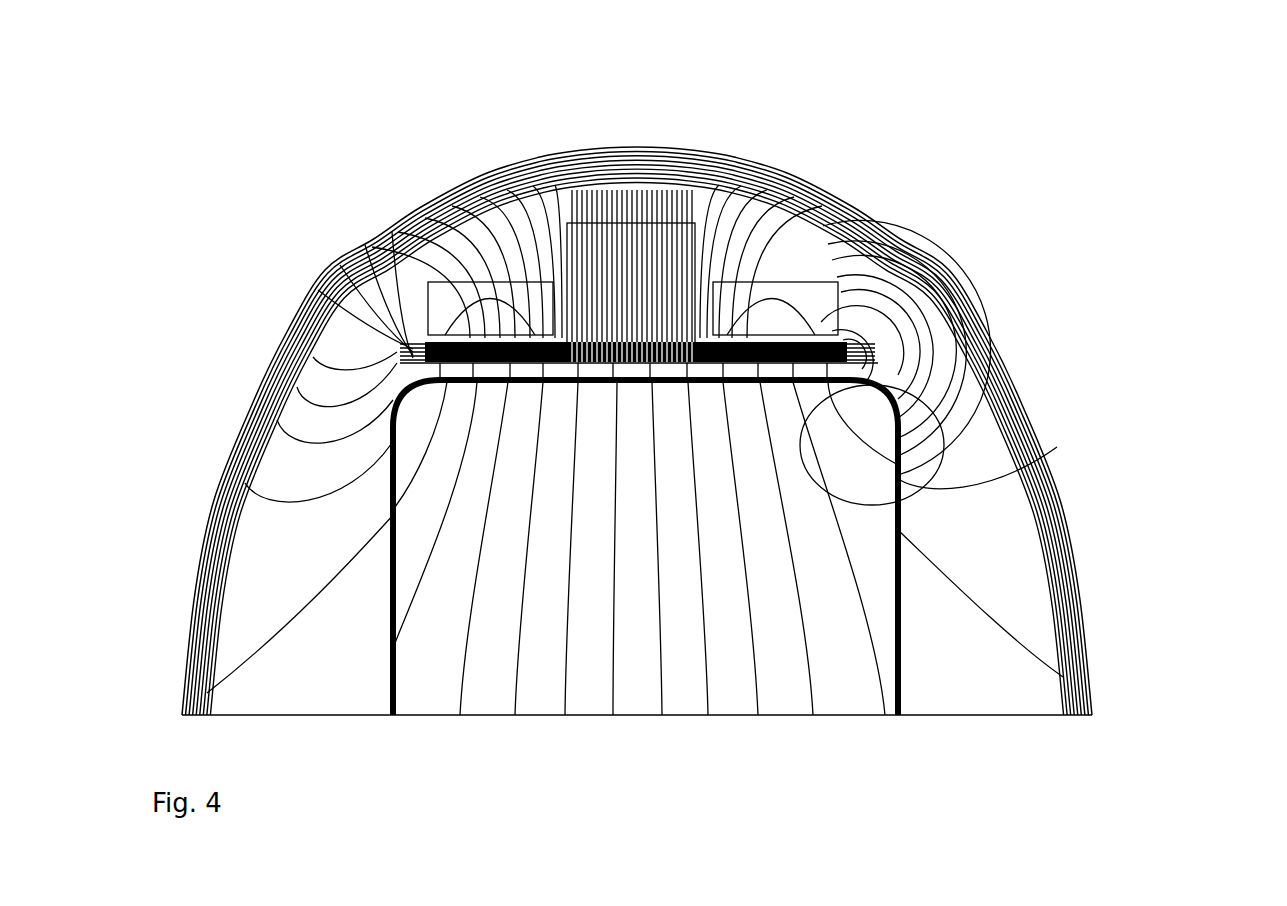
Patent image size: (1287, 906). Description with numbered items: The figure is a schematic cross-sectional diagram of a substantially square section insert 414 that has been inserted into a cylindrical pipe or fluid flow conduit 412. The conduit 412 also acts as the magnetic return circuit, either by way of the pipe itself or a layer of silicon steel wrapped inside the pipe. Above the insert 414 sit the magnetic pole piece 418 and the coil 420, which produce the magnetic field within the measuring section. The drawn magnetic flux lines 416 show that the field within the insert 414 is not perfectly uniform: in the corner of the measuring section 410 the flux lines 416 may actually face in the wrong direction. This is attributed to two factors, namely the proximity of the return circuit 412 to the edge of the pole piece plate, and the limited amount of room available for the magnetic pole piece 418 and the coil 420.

The corner of the measuring section 410 is at (943, 437).
The fluid flow conduit 412 is at (1053, 553).
The insert 414 is at (413, 392).
The magnetic flux lines 416 is at (837, 430).
The magnetic pole piece 418 is at (720, 415).
The coil 420 is at (657, 268).